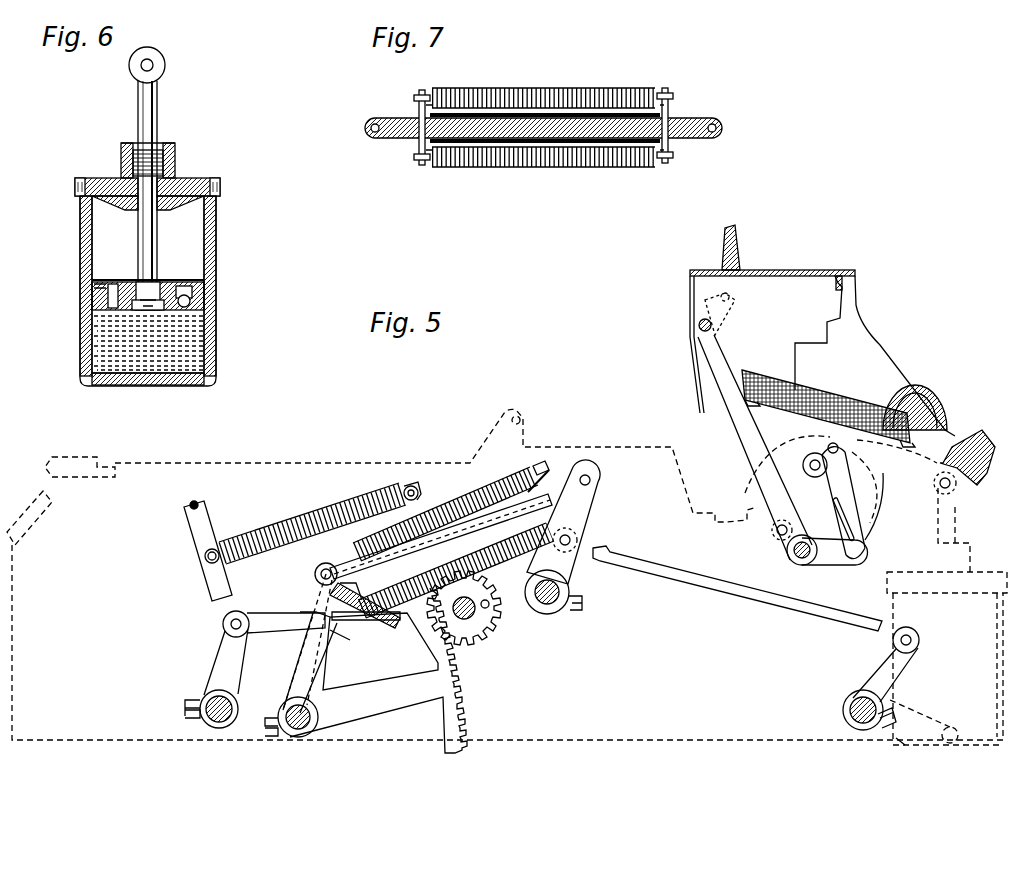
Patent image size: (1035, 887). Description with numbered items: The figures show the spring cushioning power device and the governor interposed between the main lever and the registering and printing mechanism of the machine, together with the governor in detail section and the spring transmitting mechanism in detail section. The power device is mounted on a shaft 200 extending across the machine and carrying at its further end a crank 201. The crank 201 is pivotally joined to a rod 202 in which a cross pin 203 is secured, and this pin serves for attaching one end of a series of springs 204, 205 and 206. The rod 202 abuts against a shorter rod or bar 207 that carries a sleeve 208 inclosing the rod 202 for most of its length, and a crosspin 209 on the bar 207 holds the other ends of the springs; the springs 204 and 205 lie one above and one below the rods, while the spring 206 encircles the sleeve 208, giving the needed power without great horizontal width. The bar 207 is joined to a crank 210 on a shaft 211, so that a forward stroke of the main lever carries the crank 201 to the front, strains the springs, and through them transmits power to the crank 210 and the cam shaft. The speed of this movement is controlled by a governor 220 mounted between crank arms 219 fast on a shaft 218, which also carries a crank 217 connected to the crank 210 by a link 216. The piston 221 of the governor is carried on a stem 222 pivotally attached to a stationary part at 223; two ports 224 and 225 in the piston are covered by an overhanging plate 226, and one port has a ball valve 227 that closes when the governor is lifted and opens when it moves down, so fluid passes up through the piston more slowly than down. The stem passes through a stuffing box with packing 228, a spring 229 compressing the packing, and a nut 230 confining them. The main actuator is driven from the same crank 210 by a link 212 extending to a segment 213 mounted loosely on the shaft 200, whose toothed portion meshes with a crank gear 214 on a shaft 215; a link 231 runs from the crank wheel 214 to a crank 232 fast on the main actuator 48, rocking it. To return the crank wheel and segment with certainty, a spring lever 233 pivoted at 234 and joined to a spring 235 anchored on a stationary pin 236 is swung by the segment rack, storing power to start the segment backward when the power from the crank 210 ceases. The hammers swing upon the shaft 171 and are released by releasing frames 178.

In FIG. 5, the main actuator 48 is at (212, 716).
In FIG. 5, the shaft 171 is at (699, 326).
In FIG. 5, the releasing frame 178 is at (793, 392).
In FIG. 5, the shaft 200 is at (298, 730).
In FIG. 5, the crank 201 is at (272, 655).
In FIG. 7, the rod 202 is at (405, 118).
In FIG. 5, the rod 202 is at (303, 608).
In FIG. 7, the cross pin 203 is at (423, 90).
In FIG. 5, the cross pin 203 is at (322, 566).
In FIG. 7, the spring 204 is at (556, 88).
In FIG. 5, the spring 204 is at (467, 505).
In FIG. 7, the spring 205 is at (542, 168).
In FIG. 5, the spring 205 is at (524, 556).
In FIG. 7, the spring 206 is at (418, 148).
In FIG. 5, the spring 206 is at (572, 536).
In FIG. 7, the bar 207 is at (692, 118).
In FIG. 7, the sleeve 208 is at (668, 146).
In FIG. 7, the crosspin 209 is at (667, 88).
In FIG. 5, the crank 210 is at (600, 492).
In FIG. 5, the shaft 211 is at (552, 602).
In FIG. 5, the link 212 is at (538, 488).
In FIG. 5, the segment 213 is at (940, 497).
In FIG. 5, the crank gear 214 is at (472, 640).
In FIG. 5, the shaft 215 is at (490, 610).
In FIG. 5, the link 216 is at (733, 585).
In FIG. 5, the crank 217 is at (868, 668).
In FIG. 5, the shaft 218 is at (849, 709).
In FIG. 5, the crank arm 219 is at (914, 743).
In FIG. 6, the governor 220 is at (212, 238).
In FIG. 5, the governor 220 is at (887, 580).
In FIG. 6, the piston 221 is at (157, 284).
In FIG. 6, the stem 222 is at (157, 223).
In FIG. 6, the pivotal attachment 223 is at (152, 62).
In FIG. 6, the port 224 is at (208, 285).
In FIG. 6, the port 225 is at (92, 284).
In FIG. 6, the overhanging plate 226 is at (113, 282).
In FIG. 6, the ball valve 227 is at (192, 300).
In FIG. 6, the packing 228 is at (178, 186).
In FIG. 6, the spring 229 is at (133, 158).
In FIG. 6, the nut 230 is at (165, 145).
In FIG. 5, the link 231 is at (385, 614).
In FIG. 5, the crank 232 is at (216, 648).
In FIG. 5, the spring lever 233 is at (193, 530).
In FIG. 5, the pivot 234 is at (198, 503).
In FIG. 5, the spring 235 is at (312, 508).
In FIG. 5, the stationary pin 236 is at (413, 487).